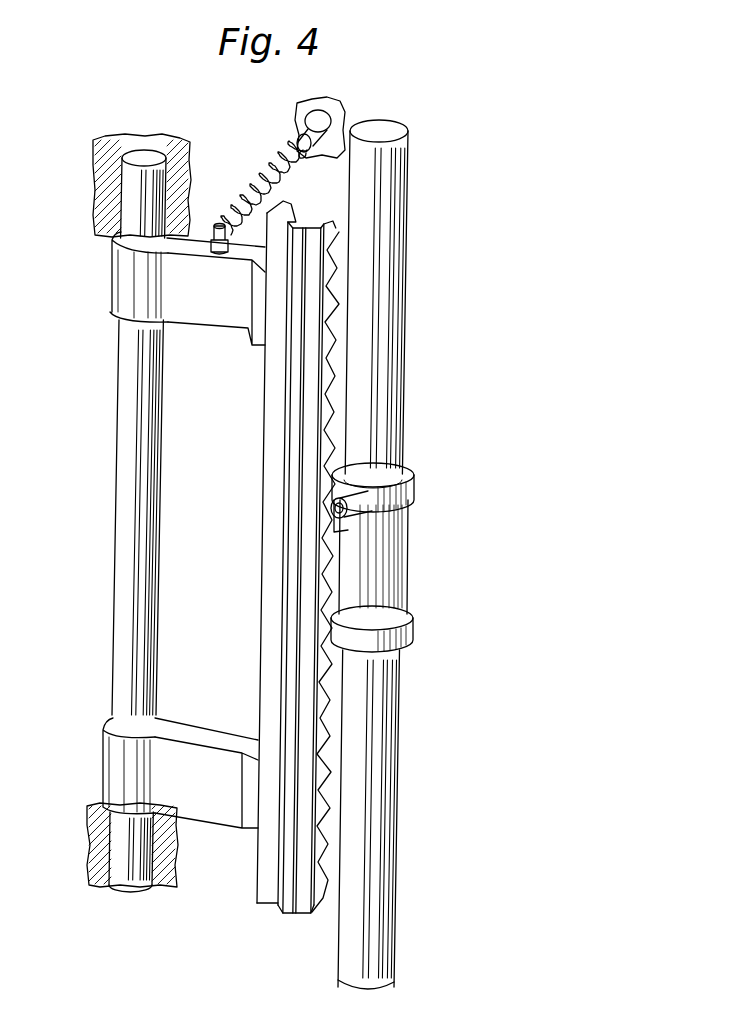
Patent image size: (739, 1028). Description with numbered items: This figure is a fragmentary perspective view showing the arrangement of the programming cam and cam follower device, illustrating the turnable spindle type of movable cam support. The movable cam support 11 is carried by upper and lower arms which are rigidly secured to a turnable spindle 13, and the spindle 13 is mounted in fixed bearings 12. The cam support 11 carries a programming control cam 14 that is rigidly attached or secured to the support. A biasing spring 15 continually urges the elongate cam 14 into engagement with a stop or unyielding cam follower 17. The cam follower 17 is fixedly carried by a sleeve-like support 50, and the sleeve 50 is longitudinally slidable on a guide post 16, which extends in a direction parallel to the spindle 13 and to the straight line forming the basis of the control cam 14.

The movable cam support 11 is at (268, 547).
The fixed bearings 12 is at (106, 182).
The turnable spindle 13 is at (133, 429).
The programming control cam 14 is at (333, 425).
The biasing spring 15 is at (258, 176).
The guide post 16 is at (388, 262).
The cam follower 17 is at (356, 519).
The sleeve-like support 50 is at (388, 579).